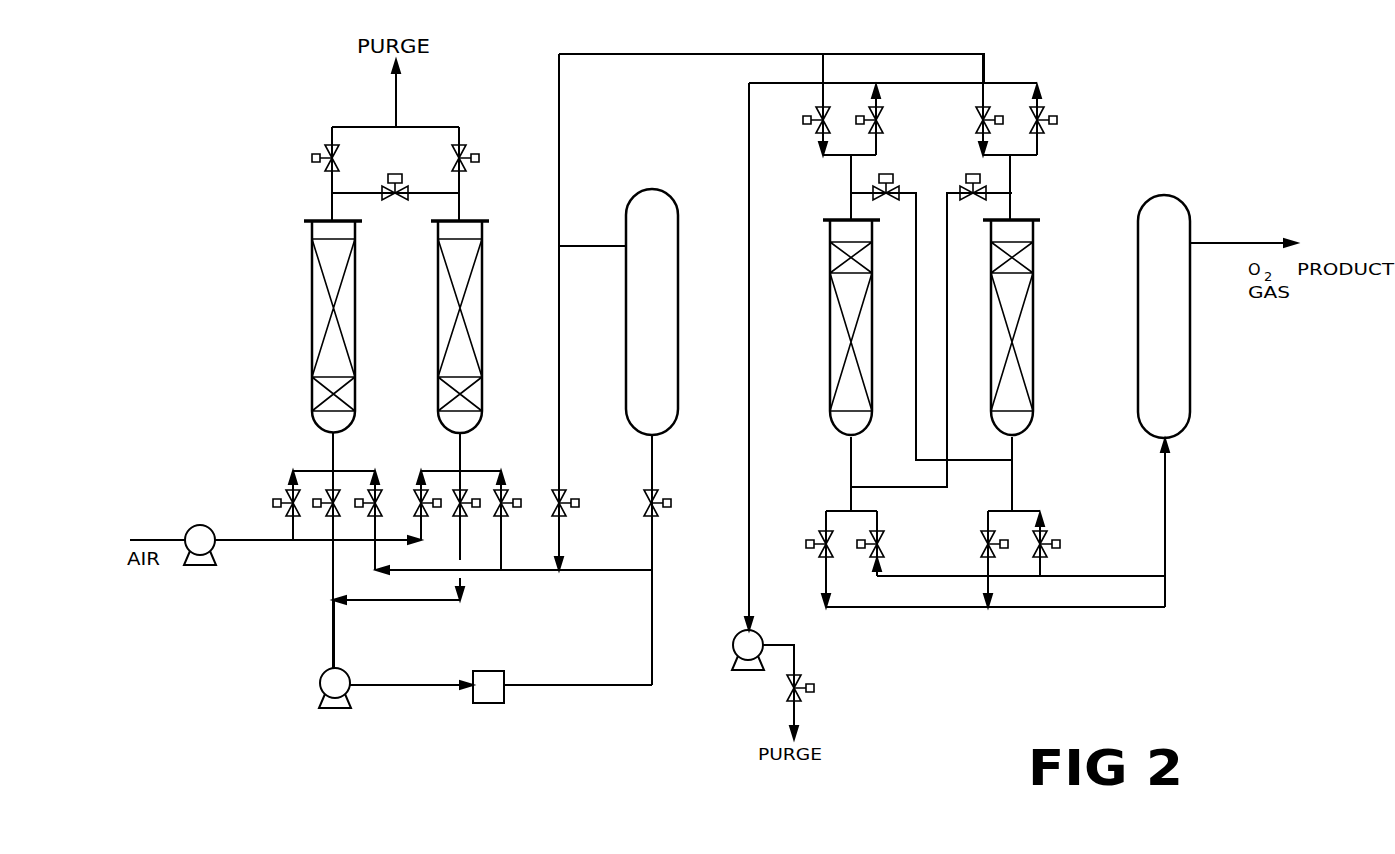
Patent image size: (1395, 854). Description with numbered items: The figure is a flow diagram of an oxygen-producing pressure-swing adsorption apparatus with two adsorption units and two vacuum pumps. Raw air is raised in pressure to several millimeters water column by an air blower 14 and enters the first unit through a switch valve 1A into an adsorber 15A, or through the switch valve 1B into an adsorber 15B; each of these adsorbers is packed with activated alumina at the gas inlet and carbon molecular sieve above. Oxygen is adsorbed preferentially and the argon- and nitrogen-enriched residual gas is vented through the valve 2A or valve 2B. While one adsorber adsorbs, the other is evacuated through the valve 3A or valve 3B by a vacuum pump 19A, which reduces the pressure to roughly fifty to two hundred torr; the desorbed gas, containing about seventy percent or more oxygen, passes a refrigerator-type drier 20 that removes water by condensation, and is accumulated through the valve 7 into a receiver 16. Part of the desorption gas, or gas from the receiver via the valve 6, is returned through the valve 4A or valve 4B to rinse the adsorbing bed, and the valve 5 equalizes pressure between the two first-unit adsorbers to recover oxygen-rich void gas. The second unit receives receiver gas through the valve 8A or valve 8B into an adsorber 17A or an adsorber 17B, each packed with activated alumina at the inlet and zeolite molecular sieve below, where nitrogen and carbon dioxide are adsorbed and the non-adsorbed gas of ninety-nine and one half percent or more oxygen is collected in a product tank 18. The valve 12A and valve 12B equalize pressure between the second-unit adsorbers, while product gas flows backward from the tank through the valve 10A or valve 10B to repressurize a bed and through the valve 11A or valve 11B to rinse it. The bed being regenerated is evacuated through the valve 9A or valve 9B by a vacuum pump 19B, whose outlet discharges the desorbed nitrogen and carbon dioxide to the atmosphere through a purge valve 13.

The switch valve 1A is at (281, 493).
The switch valve 1B is at (416, 493).
The valve 2A is at (311, 148).
The valve 2B is at (476, 148).
The valve 3A is at (322, 493).
The valve 3B is at (455, 493).
The valve 4A is at (362, 493).
The valve 4B is at (493, 493).
The valve 5 is at (395, 173).
The valve 6 is at (568, 493).
The valve 7 is at (660, 493).
The valve 8A is at (803, 110).
The valve 8B is at (998, 110).
The valve 9A is at (860, 110).
The valve 9B is at (1056, 110).
The valve 10A is at (809, 534).
The valve 10B is at (976, 534).
The valve 11A is at (863, 534).
The valve 11B is at (1056, 534).
The valve 12A is at (892, 176).
The valve 12B is at (964, 176).
The purge valve 13 is at (811, 688).
The air blower 14 is at (200, 557).
The adsorber 15A is at (304, 326).
The adsorber 15B is at (437, 327).
The receiver 16 is at (639, 312).
The adsorber 17A is at (833, 327).
The adsorber 17B is at (1030, 327).
The product tank 18 is at (1146, 316).
The vacuum pump 19A is at (337, 703).
The vacuum pump 19B is at (748, 663).
The refrigerator-type drier 20 is at (488, 701).